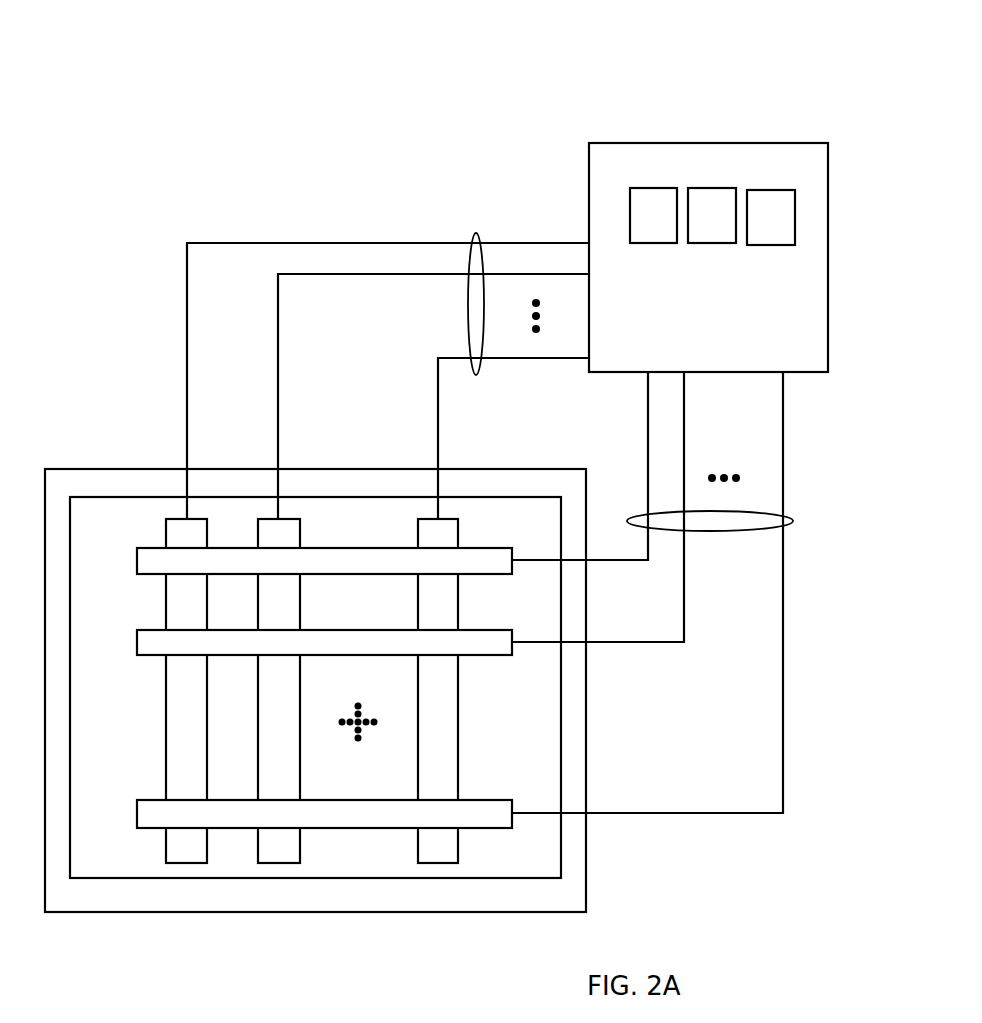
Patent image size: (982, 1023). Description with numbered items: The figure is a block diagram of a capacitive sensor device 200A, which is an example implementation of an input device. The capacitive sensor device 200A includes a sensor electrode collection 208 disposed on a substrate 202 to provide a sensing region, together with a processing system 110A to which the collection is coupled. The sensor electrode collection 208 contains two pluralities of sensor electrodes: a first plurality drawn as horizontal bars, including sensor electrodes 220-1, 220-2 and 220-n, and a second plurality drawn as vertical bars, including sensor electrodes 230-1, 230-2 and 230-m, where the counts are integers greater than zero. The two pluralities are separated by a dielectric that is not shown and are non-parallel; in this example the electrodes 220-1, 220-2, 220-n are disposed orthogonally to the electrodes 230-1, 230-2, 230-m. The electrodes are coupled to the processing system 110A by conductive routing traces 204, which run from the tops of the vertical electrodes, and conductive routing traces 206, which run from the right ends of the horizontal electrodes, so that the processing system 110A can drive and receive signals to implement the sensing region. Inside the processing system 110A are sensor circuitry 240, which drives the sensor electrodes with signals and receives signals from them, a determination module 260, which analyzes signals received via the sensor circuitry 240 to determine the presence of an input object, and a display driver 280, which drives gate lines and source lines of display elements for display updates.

The capacitive sensor device 200A is at (149, 80).
The substrate 202 is at (120, 912).
The conductive routing traces 204 is at (474, 234).
The conductive routing traces 206 is at (794, 521).
The sensor electrode collection 208 is at (207, 878).
The sensor electrode 220-1 is at (155, 548).
The sensor electrode 220-2 is at (472, 628).
The sensor electrode 220-n is at (340, 800).
The sensor electrode 230-1 is at (166, 845).
The sensor electrode 230-2 is at (300, 847).
The sensor electrode 230-m is at (458, 845).
The sensor circuitry 240 is at (640, 225).
The determination module 260 is at (699, 225).
The display driver 280 is at (758, 227).
The processing system 110A is at (690, 345).